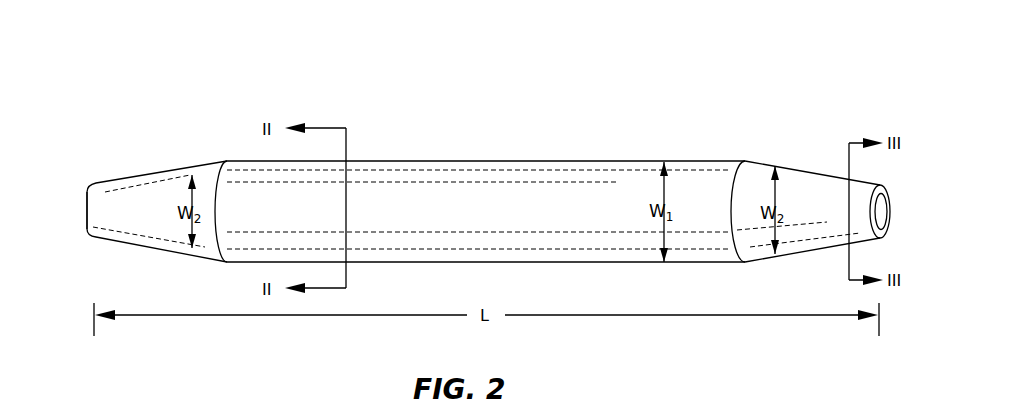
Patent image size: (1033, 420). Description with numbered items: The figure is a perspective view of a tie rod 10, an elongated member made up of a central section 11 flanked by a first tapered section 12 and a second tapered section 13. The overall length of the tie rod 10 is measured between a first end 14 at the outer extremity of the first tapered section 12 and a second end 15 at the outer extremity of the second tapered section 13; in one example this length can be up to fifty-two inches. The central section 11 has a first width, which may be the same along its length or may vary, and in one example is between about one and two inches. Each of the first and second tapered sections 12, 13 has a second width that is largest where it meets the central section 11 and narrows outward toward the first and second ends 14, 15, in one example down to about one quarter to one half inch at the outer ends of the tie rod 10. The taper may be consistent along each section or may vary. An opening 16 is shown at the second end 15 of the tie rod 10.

The tie rod 10 is at (702, 98).
The central section 11 is at (550, 183).
The first tapered section 12 is at (152, 197).
The second tapered section 13 is at (803, 183).
The first end 14 is at (87, 210).
The second end 15 is at (888, 200).
The opening 16 is at (884, 211).